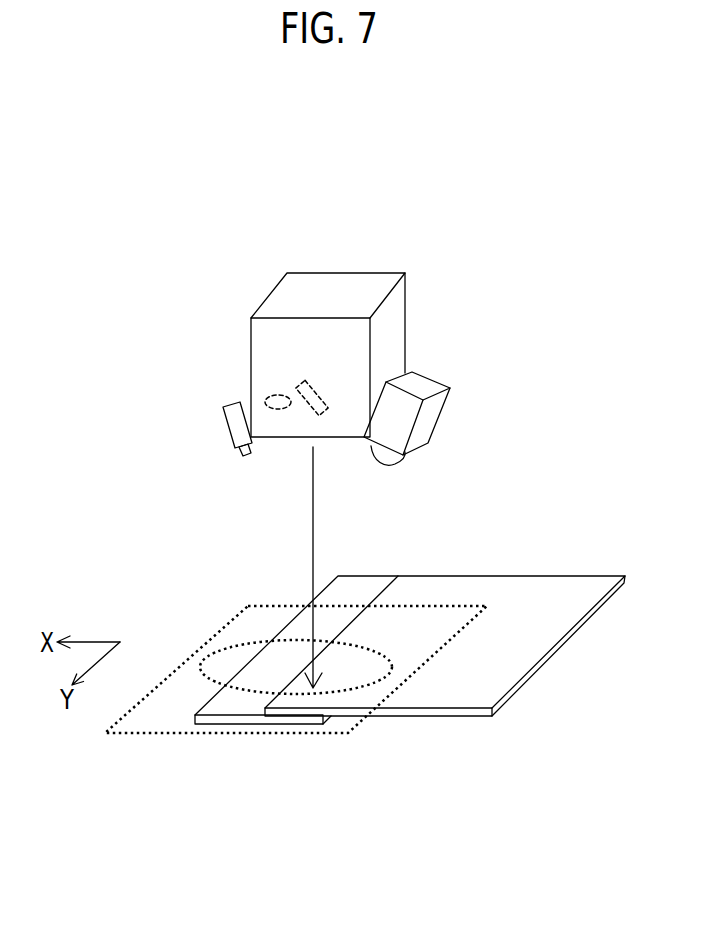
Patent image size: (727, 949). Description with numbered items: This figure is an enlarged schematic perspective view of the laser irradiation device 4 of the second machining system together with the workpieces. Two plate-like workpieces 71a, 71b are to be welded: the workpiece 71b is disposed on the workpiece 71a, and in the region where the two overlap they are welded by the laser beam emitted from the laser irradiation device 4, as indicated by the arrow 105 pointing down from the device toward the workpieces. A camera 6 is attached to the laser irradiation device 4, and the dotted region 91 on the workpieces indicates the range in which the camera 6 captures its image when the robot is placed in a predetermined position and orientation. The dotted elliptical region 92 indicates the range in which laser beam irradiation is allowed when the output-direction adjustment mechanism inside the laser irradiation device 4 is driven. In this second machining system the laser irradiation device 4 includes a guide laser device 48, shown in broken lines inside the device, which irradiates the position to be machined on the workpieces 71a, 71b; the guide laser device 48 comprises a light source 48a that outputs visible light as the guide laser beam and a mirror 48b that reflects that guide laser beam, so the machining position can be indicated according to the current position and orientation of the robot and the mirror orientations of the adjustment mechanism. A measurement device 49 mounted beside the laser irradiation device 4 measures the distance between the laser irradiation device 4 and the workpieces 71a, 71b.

The laser irradiation device 4 is at (400, 332).
The camera 6 is at (432, 410).
The guide laser device 48 is at (291, 302).
The light source 48a is at (282, 394).
The mirror 48b is at (320, 392).
The measurement device 49 is at (227, 423).
The arrow 105 is at (313, 520).
The workpiece 71a is at (213, 720).
The workpiece 71b is at (457, 712).
The region 91 is at (315, 735).
The region 92 is at (373, 688).